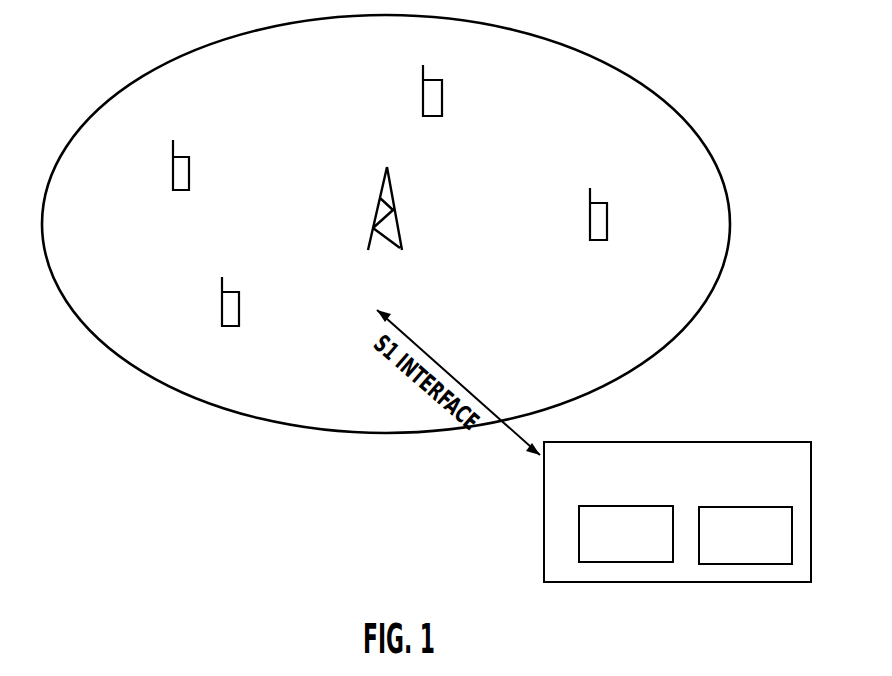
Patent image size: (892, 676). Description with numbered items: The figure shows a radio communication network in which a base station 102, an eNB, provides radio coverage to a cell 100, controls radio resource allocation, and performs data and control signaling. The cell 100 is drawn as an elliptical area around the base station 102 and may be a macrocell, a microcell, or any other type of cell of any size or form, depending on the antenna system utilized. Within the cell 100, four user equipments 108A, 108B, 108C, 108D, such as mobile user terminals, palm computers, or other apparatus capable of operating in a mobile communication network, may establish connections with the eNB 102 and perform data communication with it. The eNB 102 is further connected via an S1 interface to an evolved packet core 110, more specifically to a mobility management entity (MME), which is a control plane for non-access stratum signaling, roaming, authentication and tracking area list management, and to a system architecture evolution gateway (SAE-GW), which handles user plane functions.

The cell 100 is at (637, 78).
The base station 102 is at (393, 210).
The user equipment 108A is at (607, 240).
The user equipment 108B is at (239, 326).
The user equipment 108C is at (189, 190).
The user equipment 108D is at (442, 116).
The evolved packet core 110 is at (592, 442).